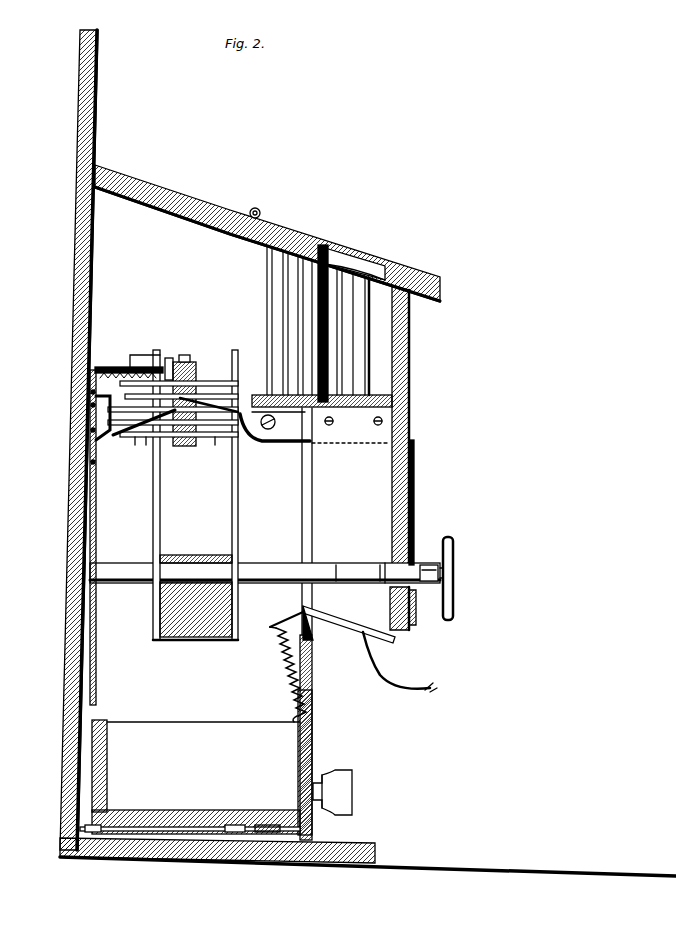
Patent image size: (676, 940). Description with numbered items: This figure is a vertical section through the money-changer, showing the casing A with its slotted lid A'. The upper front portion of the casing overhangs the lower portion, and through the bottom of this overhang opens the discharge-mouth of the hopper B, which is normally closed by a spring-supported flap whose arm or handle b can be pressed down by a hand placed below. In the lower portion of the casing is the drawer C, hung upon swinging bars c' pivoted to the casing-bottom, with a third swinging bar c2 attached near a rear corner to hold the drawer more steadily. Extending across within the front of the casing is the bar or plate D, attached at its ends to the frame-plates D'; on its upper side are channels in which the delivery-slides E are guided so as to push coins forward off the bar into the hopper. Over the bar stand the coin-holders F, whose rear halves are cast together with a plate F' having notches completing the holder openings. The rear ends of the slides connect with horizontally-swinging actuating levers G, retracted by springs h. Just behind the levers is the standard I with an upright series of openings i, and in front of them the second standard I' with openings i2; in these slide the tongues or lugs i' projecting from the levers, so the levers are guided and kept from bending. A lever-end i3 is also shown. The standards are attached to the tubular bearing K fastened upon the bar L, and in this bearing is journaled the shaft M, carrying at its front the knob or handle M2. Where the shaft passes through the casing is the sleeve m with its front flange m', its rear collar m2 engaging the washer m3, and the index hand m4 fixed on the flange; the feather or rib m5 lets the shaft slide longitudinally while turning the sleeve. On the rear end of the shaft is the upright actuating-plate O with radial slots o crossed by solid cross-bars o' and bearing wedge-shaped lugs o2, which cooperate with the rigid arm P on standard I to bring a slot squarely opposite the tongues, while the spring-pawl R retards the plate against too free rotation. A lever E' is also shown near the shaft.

The casing A is at (231, 440).
The slotted lid A' is at (277, 233).
The hopper B is at (318, 508).
The drawer C is at (202, 762).
The swinging bar c' is at (244, 860).
The third swinging bar c2 is at (82, 852).
The bar or plate D is at (353, 420).
The frame-plate D' is at (315, 440).
The delivery-slide E is at (322, 412).
The lever E' is at (332, 632).
The coin-holder F is at (339, 323).
The plate F' is at (327, 321).
The actuating lever G is at (196, 372).
The spring h is at (170, 362).
The standard I is at (157, 495).
The second standard I' is at (195, 495).
The opening i is at (135, 458).
The tongue or lug i' is at (130, 450).
The opening i2 is at (215, 445).
The rods i3 is at (218, 390).
The tubular bearing K is at (192, 556).
The bar L is at (196, 621).
The shaft M is at (285, 568).
The knob or handle M2 is at (453, 600).
The sleeve m is at (428, 558).
The flange m' is at (426, 613).
The flange or collar m2 is at (385, 583).
The washer m3 is at (380, 565).
The index hand or pointer m4 is at (414, 483).
The feather or rib m5 is at (336, 565).
The actuating-plate O is at (99, 537).
The radial slot o is at (76, 429).
The cross-bar o' is at (75, 404).
The wedge-shaped lug o2 is at (102, 428).
The rigid arm P is at (132, 368).
The spring-pawl R is at (126, 372).
The arm or handle b is at (401, 662).